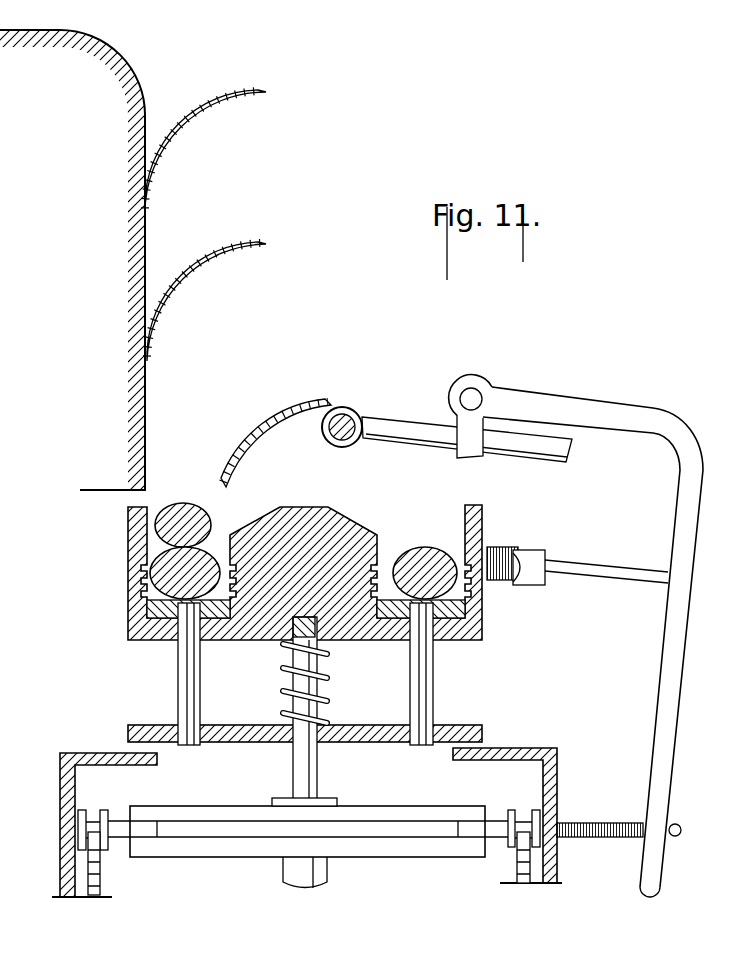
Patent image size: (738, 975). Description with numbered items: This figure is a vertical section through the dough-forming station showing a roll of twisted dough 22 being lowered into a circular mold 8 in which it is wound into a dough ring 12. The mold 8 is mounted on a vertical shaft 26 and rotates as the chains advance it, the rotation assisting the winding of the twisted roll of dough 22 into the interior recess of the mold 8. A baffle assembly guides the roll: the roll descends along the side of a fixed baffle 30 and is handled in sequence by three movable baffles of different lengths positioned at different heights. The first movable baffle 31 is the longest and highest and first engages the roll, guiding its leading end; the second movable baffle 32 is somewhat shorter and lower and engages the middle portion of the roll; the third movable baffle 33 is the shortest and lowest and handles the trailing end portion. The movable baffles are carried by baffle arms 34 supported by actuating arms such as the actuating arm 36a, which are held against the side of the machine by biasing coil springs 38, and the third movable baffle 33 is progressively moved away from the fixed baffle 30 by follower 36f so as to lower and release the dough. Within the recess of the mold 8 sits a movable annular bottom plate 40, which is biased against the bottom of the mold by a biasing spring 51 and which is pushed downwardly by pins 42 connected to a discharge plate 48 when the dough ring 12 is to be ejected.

The circular mold 8 is at (485, 504).
The dough ring 12 is at (417, 546).
The roll of twisted dough 22 is at (183, 500).
The vertical shaft 26 is at (320, 707).
The fixed baffle 30 is at (147, 138).
The first movable baffle 31 is at (247, 145).
The second movable baffle 32 is at (262, 272).
The third movable baffle 33 is at (270, 465).
The baffle arm 34 is at (400, 417).
The actuating arm 36a is at (680, 665).
The follower 36f is at (520, 558).
The biasing coil spring 38 is at (603, 820).
The movable bottom plate 40 is at (486, 614).
The pins 42 is at (178, 681).
The discharge plate 48 is at (485, 730).
The biasing spring 51 is at (282, 690).